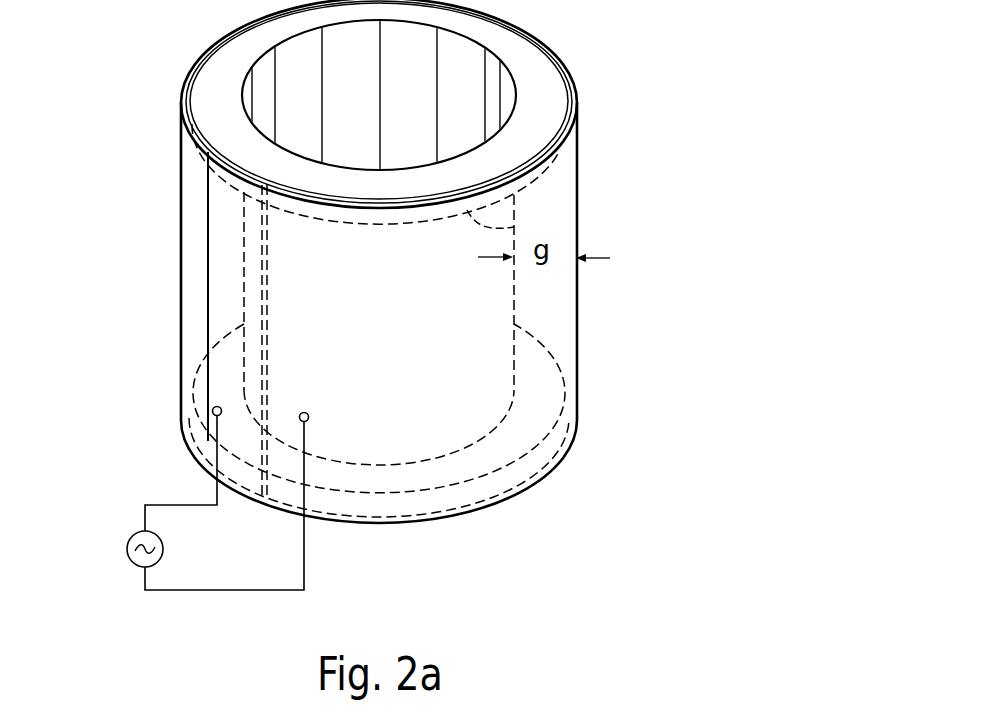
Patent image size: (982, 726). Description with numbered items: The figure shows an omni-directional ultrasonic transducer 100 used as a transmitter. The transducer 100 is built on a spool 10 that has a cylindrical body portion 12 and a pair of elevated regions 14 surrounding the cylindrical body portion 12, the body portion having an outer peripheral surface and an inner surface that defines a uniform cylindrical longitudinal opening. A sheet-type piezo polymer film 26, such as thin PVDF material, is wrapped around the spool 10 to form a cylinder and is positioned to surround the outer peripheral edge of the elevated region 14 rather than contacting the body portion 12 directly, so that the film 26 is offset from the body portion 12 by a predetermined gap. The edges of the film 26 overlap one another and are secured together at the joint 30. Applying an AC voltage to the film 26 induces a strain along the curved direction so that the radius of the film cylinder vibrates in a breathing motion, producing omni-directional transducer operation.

The ultrasonic transducer 100 is at (645, 85).
The spool 10 is at (515, 365).
The cylindrical body portion 12 is at (514, 306).
The elevated region 14 is at (514, 227).
The piezo polymer film 26 is at (576, 327).
The overlap joint 30 is at (248, 255).